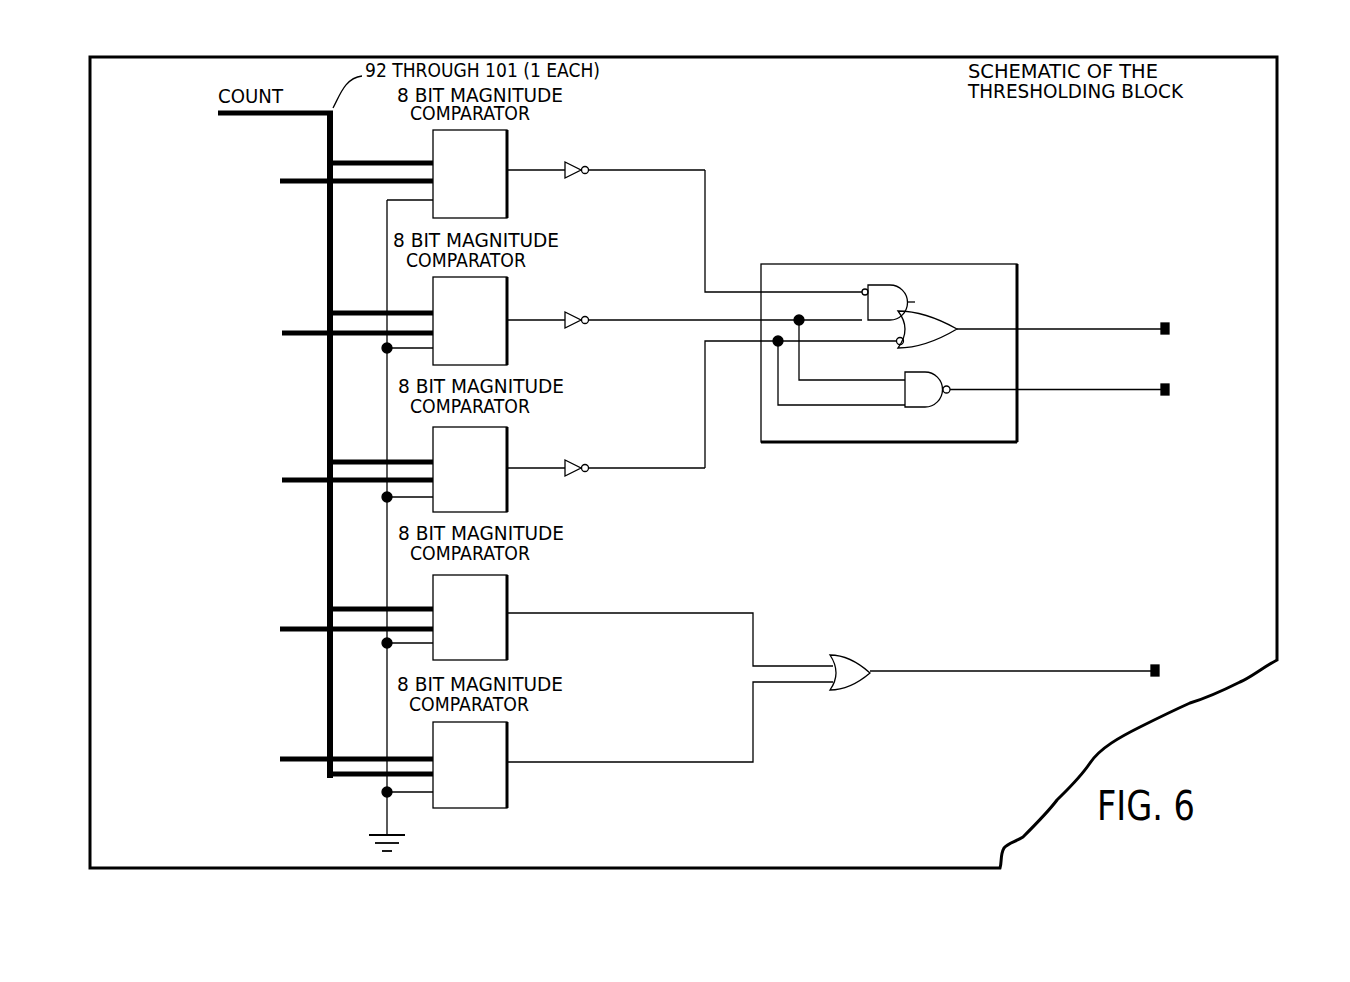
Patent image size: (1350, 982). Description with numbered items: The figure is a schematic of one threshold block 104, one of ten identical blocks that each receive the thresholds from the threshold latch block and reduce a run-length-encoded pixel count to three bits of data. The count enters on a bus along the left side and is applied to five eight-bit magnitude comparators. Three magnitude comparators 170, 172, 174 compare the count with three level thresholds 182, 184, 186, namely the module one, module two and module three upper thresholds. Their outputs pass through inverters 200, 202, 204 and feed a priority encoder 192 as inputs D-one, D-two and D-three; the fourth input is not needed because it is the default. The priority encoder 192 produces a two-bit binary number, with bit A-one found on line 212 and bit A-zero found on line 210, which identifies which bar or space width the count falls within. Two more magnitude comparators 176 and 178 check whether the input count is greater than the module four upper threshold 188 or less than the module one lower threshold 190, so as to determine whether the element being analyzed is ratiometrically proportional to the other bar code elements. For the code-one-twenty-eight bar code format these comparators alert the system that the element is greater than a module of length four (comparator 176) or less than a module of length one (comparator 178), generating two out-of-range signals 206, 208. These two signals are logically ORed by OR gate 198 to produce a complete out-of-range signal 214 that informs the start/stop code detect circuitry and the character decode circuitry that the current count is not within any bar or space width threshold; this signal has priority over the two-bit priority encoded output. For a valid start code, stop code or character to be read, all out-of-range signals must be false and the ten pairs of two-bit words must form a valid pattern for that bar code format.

The threshold block 104 is at (1278, 100).
The magnitude comparator 170 is at (507, 132).
The magnitude comparator 172 is at (507, 282).
The magnitude comparator 174 is at (507, 432).
The magnitude comparator 176 is at (507, 579).
The magnitude comparator 178 is at (507, 728).
The level threshold 182 is at (300, 179).
The level threshold 184 is at (300, 331).
The level threshold 186 is at (300, 478).
The module 4 upper threshold 188 is at (300, 627).
The module 1 lower threshold 190 is at (300, 757).
The priority encoder 192 is at (1019, 272).
The OR gate 198 is at (852, 656).
The inverter 200 is at (536, 172).
The magnitude comparator output 202 is at (536, 322).
The magnitude comparator output 204 is at (536, 470).
The out-of-range signal 206 is at (658, 612).
The out-of-range signal 208 is at (657, 762).
The line 210 is at (1070, 328).
The line 212 is at (1072, 389).
The out-of-range signal 214 is at (942, 670).